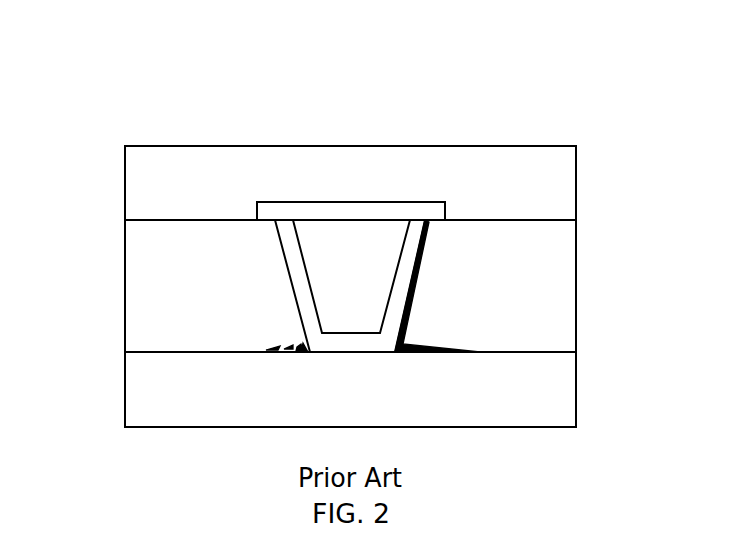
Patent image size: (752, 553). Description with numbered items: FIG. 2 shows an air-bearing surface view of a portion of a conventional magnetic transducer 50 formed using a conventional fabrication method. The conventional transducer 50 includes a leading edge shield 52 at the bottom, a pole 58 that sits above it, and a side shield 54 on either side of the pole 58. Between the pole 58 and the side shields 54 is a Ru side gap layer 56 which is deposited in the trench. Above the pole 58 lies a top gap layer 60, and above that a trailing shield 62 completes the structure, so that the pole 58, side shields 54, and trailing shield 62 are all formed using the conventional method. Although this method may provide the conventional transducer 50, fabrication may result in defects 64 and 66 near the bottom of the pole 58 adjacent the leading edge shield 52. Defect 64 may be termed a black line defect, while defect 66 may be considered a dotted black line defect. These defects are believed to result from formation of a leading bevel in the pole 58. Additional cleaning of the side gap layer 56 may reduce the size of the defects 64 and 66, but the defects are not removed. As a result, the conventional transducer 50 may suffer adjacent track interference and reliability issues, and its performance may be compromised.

The conventional transducer 50 is at (336, 79).
The leading edge shield 52 is at (125, 400).
The side shield 54 is at (127, 290).
The Ru side gap layer 56 is at (282, 245).
The pole 58 is at (408, 240).
The top gap layer 60 is at (257, 202).
The trailing shield 62 is at (576, 183).
The black line defect 64 is at (285, 341).
The dotted black line defect 66 is at (418, 332).